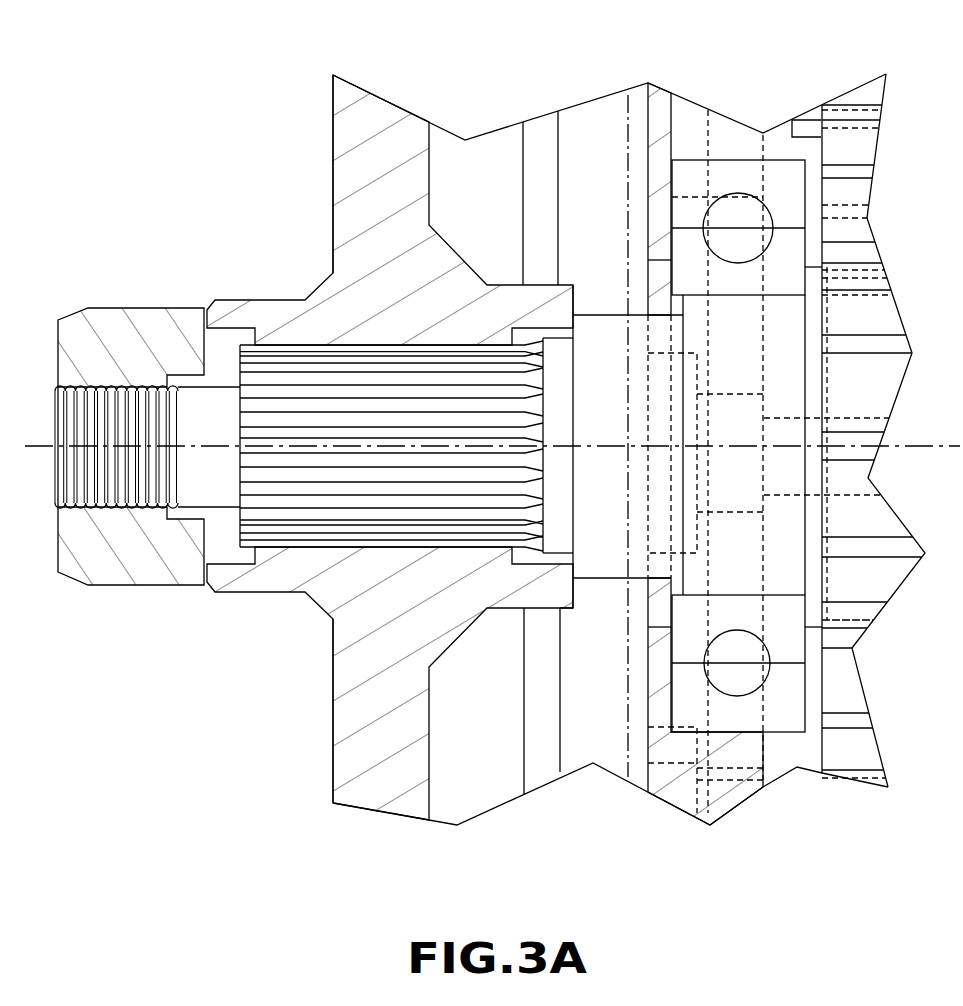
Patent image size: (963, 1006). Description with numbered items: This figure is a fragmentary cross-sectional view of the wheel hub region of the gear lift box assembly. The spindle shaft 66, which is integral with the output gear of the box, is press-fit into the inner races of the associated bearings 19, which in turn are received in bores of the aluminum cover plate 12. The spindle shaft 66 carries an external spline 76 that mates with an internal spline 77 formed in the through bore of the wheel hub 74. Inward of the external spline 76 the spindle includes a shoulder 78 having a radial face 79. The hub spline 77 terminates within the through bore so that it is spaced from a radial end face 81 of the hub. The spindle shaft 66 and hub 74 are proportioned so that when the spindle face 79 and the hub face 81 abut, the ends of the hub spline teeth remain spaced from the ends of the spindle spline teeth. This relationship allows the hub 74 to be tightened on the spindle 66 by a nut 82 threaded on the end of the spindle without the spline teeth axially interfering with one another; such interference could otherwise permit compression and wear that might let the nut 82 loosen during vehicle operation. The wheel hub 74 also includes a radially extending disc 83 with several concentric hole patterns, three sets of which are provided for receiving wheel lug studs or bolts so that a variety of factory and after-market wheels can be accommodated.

The cover plate 12 is at (688, 118).
The bearings 19 is at (735, 160).
The spindle shaft 66 is at (782, 598).
The wheel hub 74 is at (326, 705).
The external spline 76 is at (303, 548).
The internal spline 77 is at (317, 345).
The shoulder 78 is at (610, 580).
The radial face 79 is at (573, 577).
The radial end face 81 is at (580, 593).
The nut 82 is at (100, 587).
The radially extending disc 83 is at (333, 122).